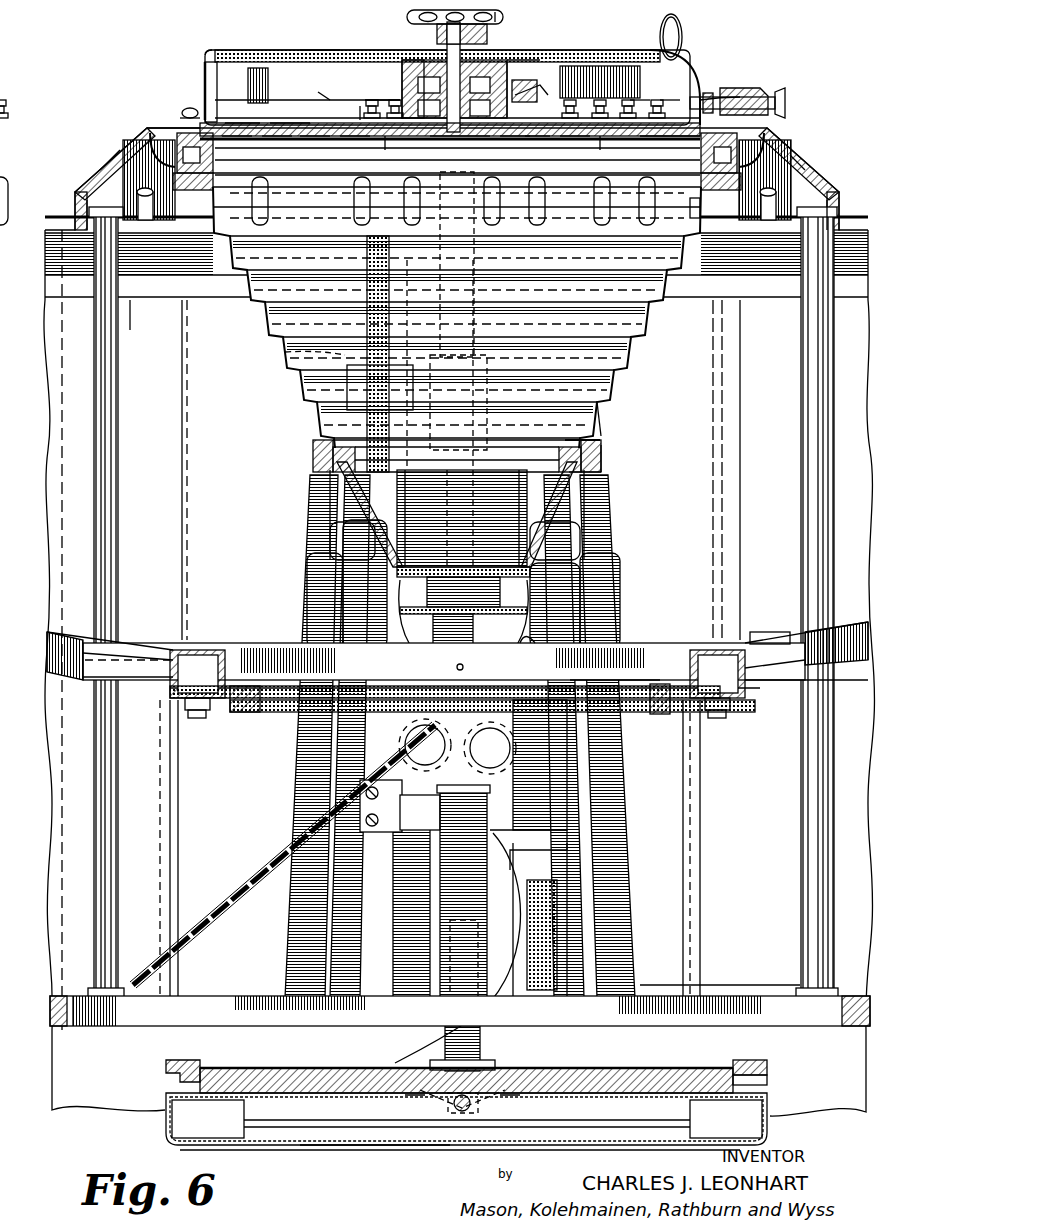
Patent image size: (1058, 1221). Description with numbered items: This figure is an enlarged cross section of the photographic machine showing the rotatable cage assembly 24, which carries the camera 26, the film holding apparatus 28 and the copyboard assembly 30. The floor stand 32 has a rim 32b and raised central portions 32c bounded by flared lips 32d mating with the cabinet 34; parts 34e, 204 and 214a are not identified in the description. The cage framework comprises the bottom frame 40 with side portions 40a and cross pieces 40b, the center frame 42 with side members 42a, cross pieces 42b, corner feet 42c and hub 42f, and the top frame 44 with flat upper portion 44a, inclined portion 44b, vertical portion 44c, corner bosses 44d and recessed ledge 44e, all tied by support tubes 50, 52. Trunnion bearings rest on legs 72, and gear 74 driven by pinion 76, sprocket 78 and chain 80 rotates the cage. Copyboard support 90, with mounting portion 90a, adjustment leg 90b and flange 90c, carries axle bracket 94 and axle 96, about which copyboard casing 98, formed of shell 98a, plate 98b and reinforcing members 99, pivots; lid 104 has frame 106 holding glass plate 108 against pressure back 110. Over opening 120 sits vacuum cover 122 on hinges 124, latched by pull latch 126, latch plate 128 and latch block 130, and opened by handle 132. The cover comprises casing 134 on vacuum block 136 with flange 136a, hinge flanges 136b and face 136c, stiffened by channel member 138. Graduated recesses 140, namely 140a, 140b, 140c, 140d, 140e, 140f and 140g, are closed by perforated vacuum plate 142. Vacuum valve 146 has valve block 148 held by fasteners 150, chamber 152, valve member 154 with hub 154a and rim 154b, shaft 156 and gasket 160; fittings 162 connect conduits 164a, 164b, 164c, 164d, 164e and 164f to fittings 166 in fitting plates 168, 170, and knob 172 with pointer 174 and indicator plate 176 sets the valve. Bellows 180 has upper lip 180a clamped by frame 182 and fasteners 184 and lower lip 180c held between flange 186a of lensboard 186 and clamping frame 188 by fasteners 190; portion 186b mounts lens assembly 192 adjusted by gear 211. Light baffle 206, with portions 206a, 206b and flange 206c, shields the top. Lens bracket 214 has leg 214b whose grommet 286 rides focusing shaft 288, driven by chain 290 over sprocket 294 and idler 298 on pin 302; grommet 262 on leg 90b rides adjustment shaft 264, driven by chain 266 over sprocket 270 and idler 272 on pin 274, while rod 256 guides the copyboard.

The cage assembly 24 is at (76, 72).
The camera 26 is at (622, 360).
The film holding apparatus 28 is at (322, 50).
The copyboard assembly 30 is at (360, 1147).
The floor stand portion 32 is at (62, 1105).
The upwardly extending rim 32b is at (735, 985).
The upwardly extending centrally located portions 32c is at (345, 905).
The flared lips 32d is at (630, 940).
The cabinet portion 34 is at (452, 849).
The side wall flange 34e is at (755, 645).
The first end frame 40 is at (775, 1025).
The side portions 40a is at (830, 1026).
The cross pieces 40b is at (120, 1026).
The center frame 42 is at (665, 645).
The side members 42a is at (745, 650).
The cross pieces 42b is at (240, 650).
The extending feet 42c is at (840, 662).
The hub portion 42f is at (539, 654).
The top frame 44 is at (785, 112).
The flat upper portion 44a is at (150, 128).
The inclined portion 44b is at (790, 160).
The vertical portion 44c is at (75, 205).
The internal enlarged bosses 44d is at (818, 150).
The recessed ledge 44e is at (190, 118).
The support tube 50 is at (97, 455).
The support tube 52 is at (832, 436).
The legs 72 is at (595, 918).
The gear 74 is at (580, 578).
The pinion 76 is at (492, 764).
The sprocket 78 is at (395, 748).
The driving chain 80 is at (245, 880).
The copyboard support bracket 90 is at (430, 1000).
The elongated tubular mounting portion 90a is at (440, 830).
The adjustment leg 90b is at (600, 855).
The mounting flange portion 90c is at (545, 1045).
The axle mounting bracket 94 is at (466, 1112).
The axle 96 is at (455, 1115).
The copyboard casing 98 is at (165, 1125).
The outer dish-shaped shell 98a is at (375, 1150).
The flat inner support plate 98b is at (760, 1088).
The reinforcing members 99 is at (690, 1110).
The lid 104 is at (628, 1066).
The rectangular frame 106 is at (770, 1066).
The transparent glass plate 108 is at (290, 1070).
The deformable pressure back 110 is at (230, 1068).
The rectangular opening 120 is at (690, 200).
The vacuum cover 122 is at (212, 50).
The hinges 124 is at (205, 85).
The spring loaded pull latch 126 is at (780, 102).
The latch plate 128 is at (750, 100).
The latch block 130 is at (705, 95).
The handle 132 is at (690, 25).
The dish-shaped casing 134 is at (268, 52).
The vacuum block 136 is at (255, 70).
The circumferential flange 136a is at (272, 80).
The hinge supporting flanges 136b is at (208, 62).
The planar lower face 136c is at (520, 148).
The channel-shaped reinforcing member 138 is at (665, 52).
The recesses 140 is at (450, 131).
The recess 140a is at (460, 136).
The recess 140b is at (355, 150).
The recess 140c is at (318, 148).
The recess 140d is at (293, 112).
The recess 140e is at (283, 149).
The recess 140f is at (249, 112).
The recess 140g is at (244, 147).
The vacuum plate 142 is at (648, 136).
The vacuum controlling valve 146 is at (560, 24).
The valve block 148 is at (515, 60).
The fasteners 150 is at (462, 55).
The valve chamber 152 is at (404, 60).
The rotatable valve member 154 is at (526, 86).
The hub portion 154a is at (475, 138).
The enlarged rim 154b is at (537, 150).
The valve shaft 156 is at (448, 38).
The sealing gasket 160 is at (398, 100).
The tube fittings 162 is at (547, 94).
The vacuum conduit 164a is at (575, 138).
The vacuum conduit 164b is at (309, 90).
The vacuum conduit 164c is at (375, 100).
The vacuum conduit 164d is at (643, 84).
The vacuum conduit 164e is at (681, 84).
The vacuum conduit 164f is at (705, 85).
The tube fittings 166 is at (612, 150).
The fitting plate 168 is at (600, 108).
The fitting plate 170 is at (360, 112).
The knob 172 is at (406, 17).
The pointer 174 is at (500, 17).
The indicator plate 176 is at (530, 60).
The bellows 180 is at (615, 385).
The upper mounting lip 180a is at (165, 135).
The lower mounting lip 180c is at (606, 462).
The upper clamping frame 182 is at (145, 322).
The fasteners 184 is at (750, 190).
The lensboard 186 is at (545, 510).
The bellows mounting flange 186a is at (595, 475).
The lens supporting portion 186b is at (520, 560).
The lower clamping frame 188 is at (590, 445).
The fasteners 190 is at (582, 440).
The variable-aperture optical lens assembly 192 is at (585, 568).
The end plate 204 is at (850, 640).
The light baffle 206 is at (138, 300).
The gently inclined sloping portion 206a is at (58, 318).
The steeply inclined portion 206b is at (738, 300).
The mounting flange 206c is at (790, 235).
The toothed gear 211 is at (545, 608).
The lens positioning bracket 214 is at (480, 478).
The cylinder shaft 214a is at (490, 384).
The leg 214b is at (312, 392).
The positioning and support rod 256 is at (475, 652).
The internally threaded grommet 262 is at (570, 828).
The second copyboard adjustment shaft 264 is at (560, 742).
The drive chain 266 is at (662, 708).
The sprocket 270 is at (555, 678).
The idler sprocket 272 is at (185, 700).
The mounting pin 274 is at (188, 716).
The internally threaded grommet 286 is at (285, 352).
The second focusing shaft 288 is at (345, 542).
The drive chain 290 is at (250, 712).
The sprocket 294 is at (340, 720).
The idler sprocket 298 is at (755, 706).
The mounting pin 302 is at (728, 716).